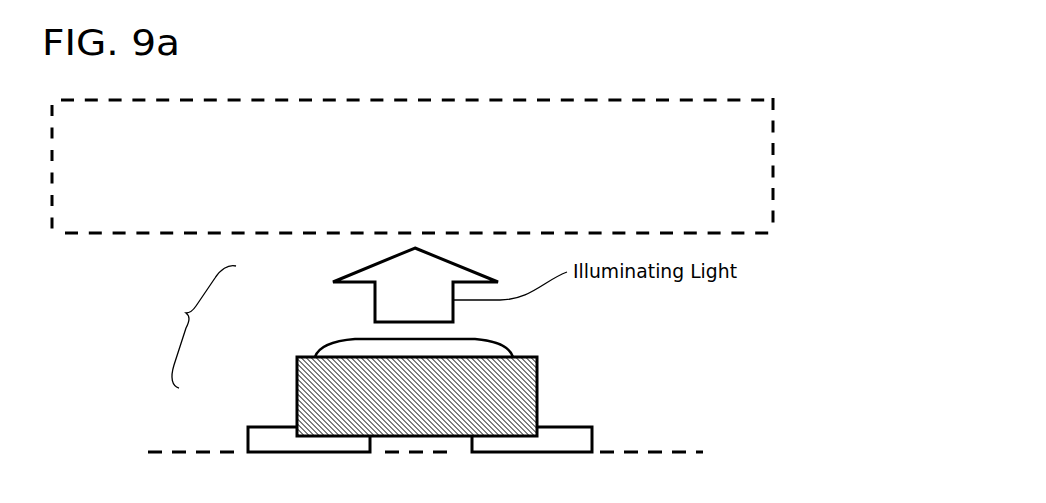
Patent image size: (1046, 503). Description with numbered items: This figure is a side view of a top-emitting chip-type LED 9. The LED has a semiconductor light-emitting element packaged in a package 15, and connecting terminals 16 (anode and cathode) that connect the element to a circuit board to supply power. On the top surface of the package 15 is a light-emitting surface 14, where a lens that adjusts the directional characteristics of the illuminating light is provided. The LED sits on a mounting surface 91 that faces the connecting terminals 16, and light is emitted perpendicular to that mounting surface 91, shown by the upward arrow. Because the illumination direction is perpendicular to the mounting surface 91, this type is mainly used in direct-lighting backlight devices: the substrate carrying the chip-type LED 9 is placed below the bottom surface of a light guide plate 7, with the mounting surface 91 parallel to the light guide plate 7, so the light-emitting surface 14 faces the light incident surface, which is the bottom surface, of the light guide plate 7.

The light guide plate 7 is at (755, 191).
The chip-type LED 9 is at (197, 327).
The light-emitting surface 14 is at (322, 351).
The package 15 is at (297, 399).
The connecting terminals 16 is at (258, 440).
The mounting surface 91 is at (667, 451).